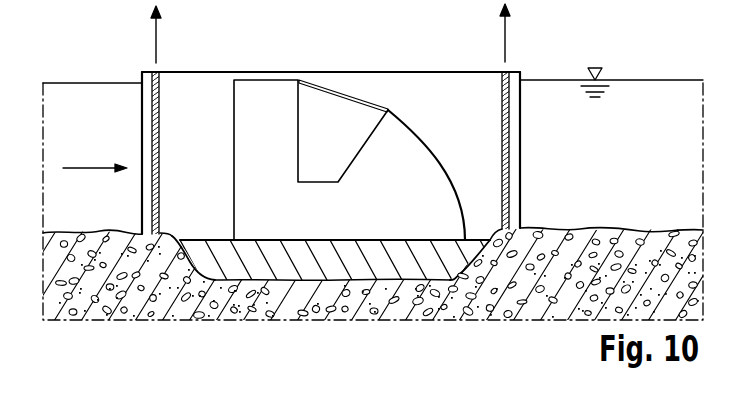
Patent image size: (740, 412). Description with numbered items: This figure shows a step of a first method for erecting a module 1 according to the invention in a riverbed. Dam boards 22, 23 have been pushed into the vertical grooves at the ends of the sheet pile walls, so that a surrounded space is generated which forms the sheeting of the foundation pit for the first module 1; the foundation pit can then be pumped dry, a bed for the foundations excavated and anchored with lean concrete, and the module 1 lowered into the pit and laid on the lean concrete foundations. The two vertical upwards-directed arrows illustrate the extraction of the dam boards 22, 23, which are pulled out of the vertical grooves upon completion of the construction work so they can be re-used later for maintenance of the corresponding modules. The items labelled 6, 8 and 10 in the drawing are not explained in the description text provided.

The module 1 is at (426, 87).
The flap gate (closure element) 6 is at (340, 92).
The headwater level 8 is at (640, 80).
The flow direction 10 is at (93, 167).
The dam board 22 is at (161, 139).
The dam board 23 is at (501, 137).